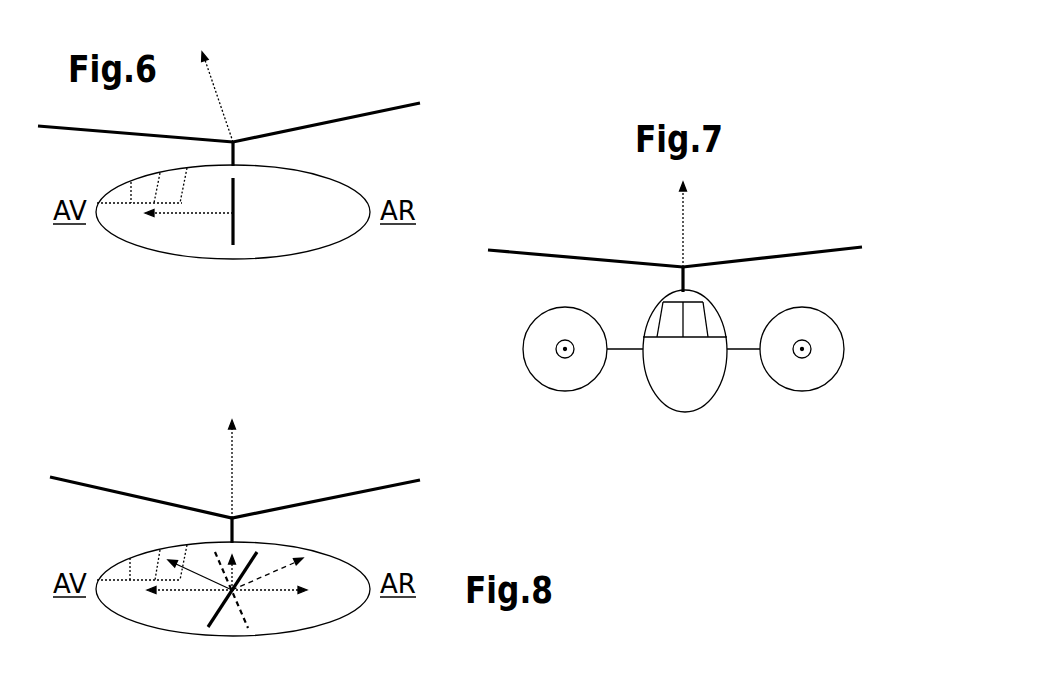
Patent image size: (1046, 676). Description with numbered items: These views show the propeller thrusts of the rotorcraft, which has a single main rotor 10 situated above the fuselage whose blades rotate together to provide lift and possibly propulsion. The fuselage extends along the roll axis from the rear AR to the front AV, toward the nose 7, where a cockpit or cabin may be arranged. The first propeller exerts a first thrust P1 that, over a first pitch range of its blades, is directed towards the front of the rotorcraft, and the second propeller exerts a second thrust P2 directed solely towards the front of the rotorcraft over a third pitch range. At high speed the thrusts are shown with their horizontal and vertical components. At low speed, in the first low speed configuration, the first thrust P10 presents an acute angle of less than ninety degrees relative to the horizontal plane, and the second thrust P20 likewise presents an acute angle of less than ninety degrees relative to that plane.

In FIG. 6, the main rotor 10 is at (334, 102).
In FIG. 7, the main rotor 10 is at (793, 232).
In FIG. 8, the main rotor 10 is at (359, 466).
In FIG. 7, the nose 7 is at (662, 373).
In FIG. 7, the first thrust P1 is at (566, 352).
In FIG. 6, the second thrust P2 is at (194, 215).
In FIG. 7, the second thrust P2 is at (803, 351).
In FIG. 8, the first thrust P10 is at (276, 573).
In FIG. 8, the second thrust P20 is at (200, 573).